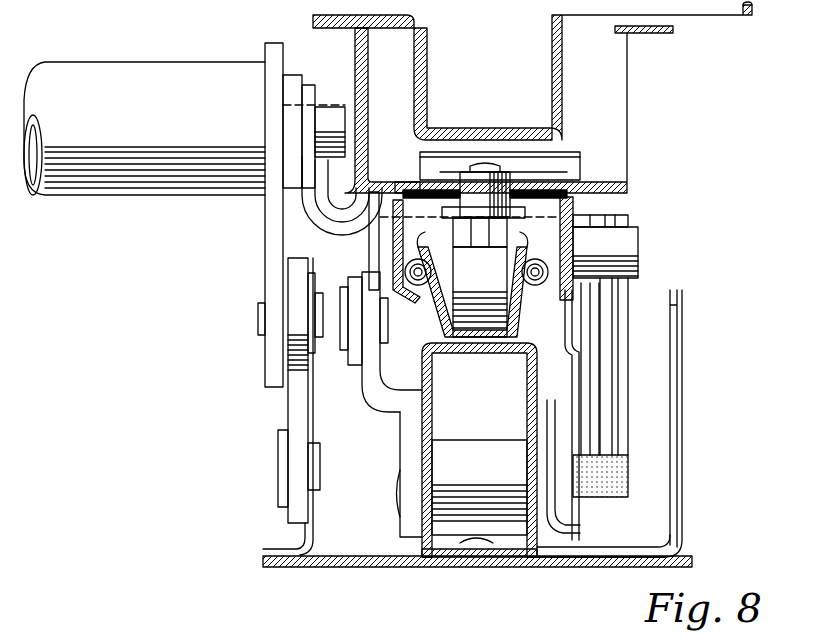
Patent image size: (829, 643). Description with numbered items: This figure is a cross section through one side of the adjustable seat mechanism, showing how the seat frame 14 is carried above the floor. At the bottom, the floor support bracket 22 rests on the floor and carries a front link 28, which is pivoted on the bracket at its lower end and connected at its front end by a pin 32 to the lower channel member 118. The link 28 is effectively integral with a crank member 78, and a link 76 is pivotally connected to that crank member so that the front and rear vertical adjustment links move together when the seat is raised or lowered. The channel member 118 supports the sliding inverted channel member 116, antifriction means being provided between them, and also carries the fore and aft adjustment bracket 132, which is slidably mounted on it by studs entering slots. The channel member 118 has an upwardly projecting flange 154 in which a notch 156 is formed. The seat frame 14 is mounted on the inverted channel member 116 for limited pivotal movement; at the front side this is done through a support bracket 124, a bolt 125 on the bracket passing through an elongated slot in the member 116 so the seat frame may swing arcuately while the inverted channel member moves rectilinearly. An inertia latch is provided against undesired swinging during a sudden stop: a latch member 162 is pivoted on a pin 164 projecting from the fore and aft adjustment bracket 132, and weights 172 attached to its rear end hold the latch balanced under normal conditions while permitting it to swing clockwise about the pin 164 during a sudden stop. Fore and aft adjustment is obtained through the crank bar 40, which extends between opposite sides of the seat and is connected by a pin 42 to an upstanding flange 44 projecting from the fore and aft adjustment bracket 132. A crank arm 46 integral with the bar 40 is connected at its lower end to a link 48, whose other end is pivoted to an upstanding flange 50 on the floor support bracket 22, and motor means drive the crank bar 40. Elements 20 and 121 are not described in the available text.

The seat frame 14 is at (682, 26).
The base plate 20 is at (328, 566).
The floor support bracket 22 is at (566, 558).
The front link 28 is at (470, 455).
The pin 32 is at (398, 472).
The crank bar 40 is at (143, 78).
The pin 42 is at (325, 110).
The upstanding flange 44 is at (318, 212).
The crank arm 46 is at (268, 238).
The link 48 is at (298, 394).
The upstanding flange 50 is at (308, 528).
The link 76 is at (355, 357).
The crank member 78 is at (397, 410).
The inverted channel member 116 is at (572, 210).
The channel member 118 is at (443, 313).
The terminal plate 121 is at (425, 210).
The support bracket 124 is at (620, 145).
The bolt 125 is at (472, 238).
The fore and aft adjustment bracket 132 is at (566, 346).
The upwardly projecting flange 154 is at (680, 492).
The notch 156 is at (679, 338).
The latch member 162 is at (605, 320).
The pin 164 is at (630, 243).
The weights 172 is at (596, 356).